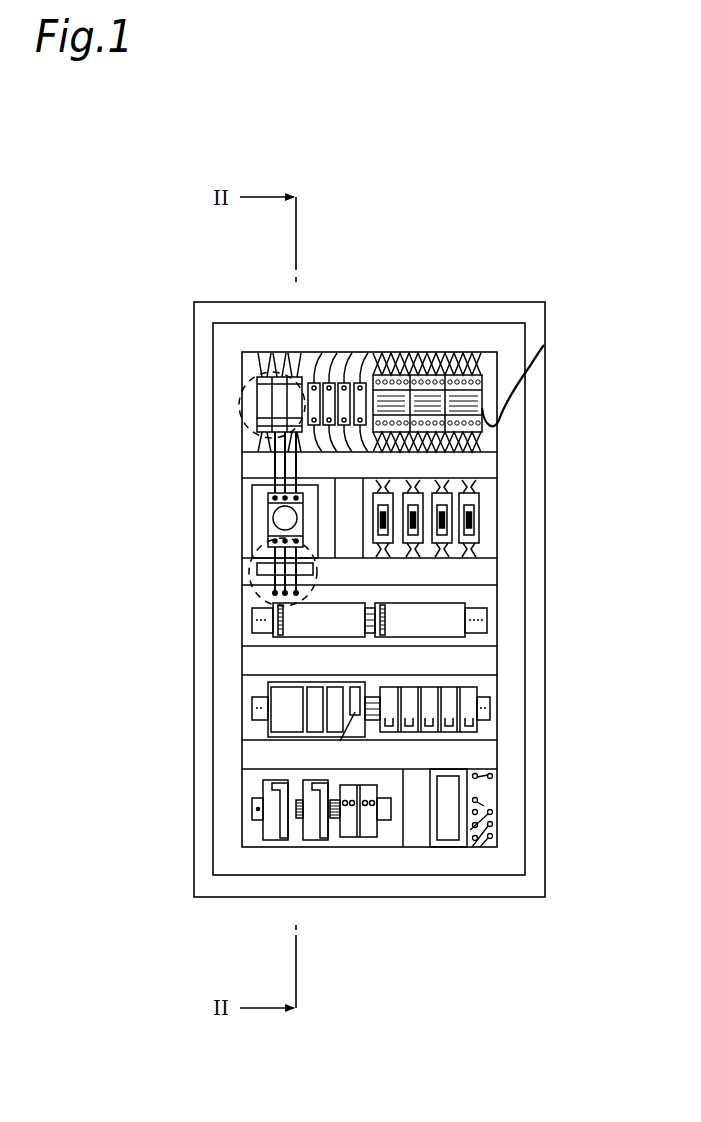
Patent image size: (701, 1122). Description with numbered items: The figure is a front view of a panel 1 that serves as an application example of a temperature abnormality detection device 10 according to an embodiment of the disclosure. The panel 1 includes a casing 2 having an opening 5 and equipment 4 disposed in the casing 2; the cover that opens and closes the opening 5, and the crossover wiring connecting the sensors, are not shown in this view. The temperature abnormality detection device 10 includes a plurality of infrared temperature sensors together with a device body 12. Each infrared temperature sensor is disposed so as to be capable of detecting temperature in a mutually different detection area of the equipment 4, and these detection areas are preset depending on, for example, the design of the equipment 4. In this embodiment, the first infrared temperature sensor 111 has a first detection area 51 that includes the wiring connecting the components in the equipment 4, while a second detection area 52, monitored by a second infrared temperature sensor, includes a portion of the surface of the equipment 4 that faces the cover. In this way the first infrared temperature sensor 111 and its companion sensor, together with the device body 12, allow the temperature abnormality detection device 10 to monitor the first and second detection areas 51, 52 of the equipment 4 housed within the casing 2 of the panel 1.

The panel 1 is at (558, 289).
The casing 2 is at (546, 583).
The equipment 4 is at (488, 505).
The opening 5 is at (526, 702).
The temperature abnormality detection device 10 is at (431, 841).
The device body 12 is at (445, 845).
The first detection area 51 is at (245, 376).
The second detection area 52 is at (248, 568).
The first infrared temperature sensor 111 is at (260, 553).